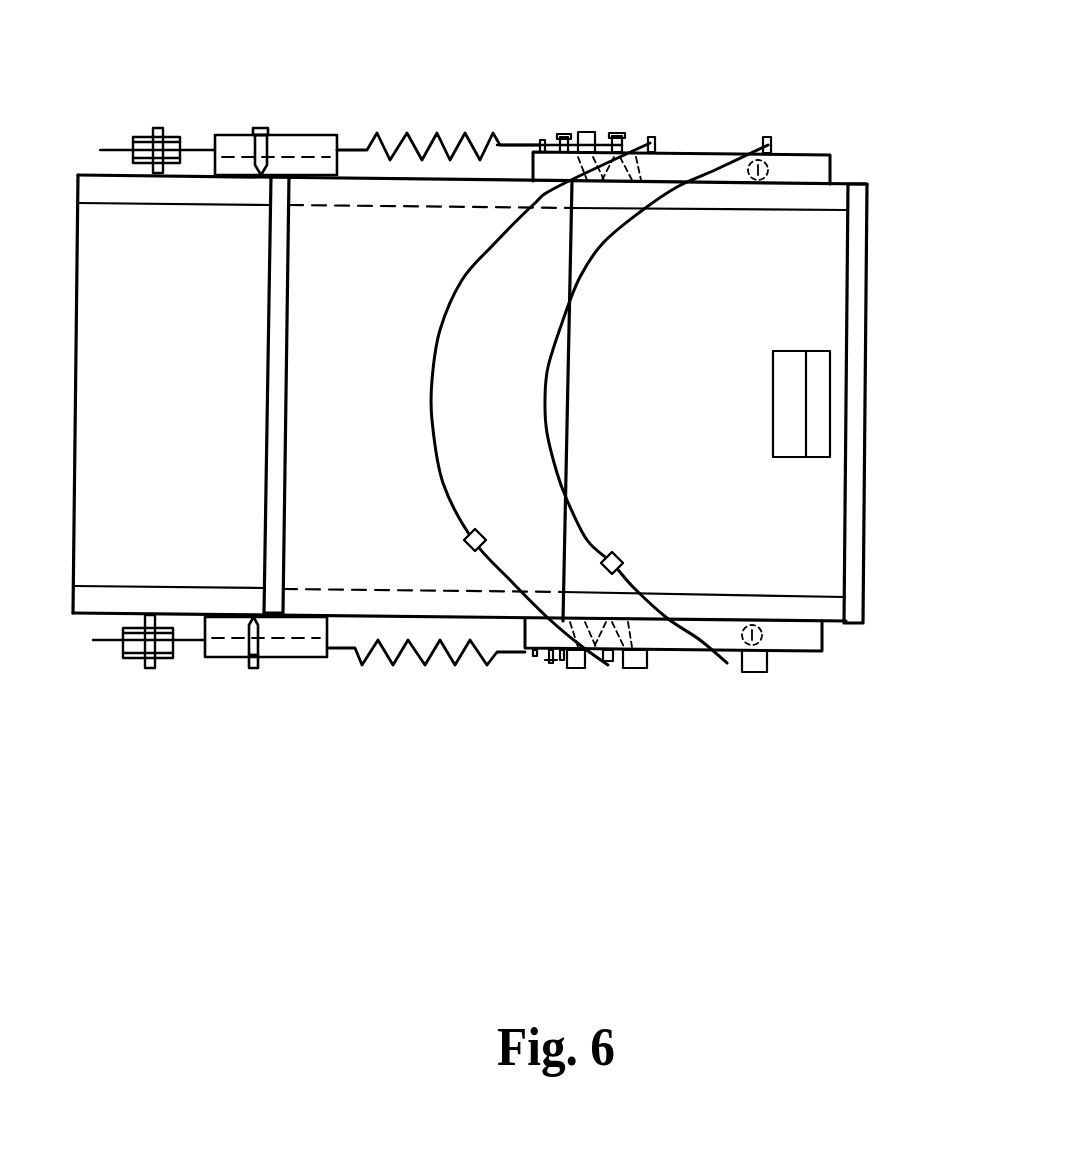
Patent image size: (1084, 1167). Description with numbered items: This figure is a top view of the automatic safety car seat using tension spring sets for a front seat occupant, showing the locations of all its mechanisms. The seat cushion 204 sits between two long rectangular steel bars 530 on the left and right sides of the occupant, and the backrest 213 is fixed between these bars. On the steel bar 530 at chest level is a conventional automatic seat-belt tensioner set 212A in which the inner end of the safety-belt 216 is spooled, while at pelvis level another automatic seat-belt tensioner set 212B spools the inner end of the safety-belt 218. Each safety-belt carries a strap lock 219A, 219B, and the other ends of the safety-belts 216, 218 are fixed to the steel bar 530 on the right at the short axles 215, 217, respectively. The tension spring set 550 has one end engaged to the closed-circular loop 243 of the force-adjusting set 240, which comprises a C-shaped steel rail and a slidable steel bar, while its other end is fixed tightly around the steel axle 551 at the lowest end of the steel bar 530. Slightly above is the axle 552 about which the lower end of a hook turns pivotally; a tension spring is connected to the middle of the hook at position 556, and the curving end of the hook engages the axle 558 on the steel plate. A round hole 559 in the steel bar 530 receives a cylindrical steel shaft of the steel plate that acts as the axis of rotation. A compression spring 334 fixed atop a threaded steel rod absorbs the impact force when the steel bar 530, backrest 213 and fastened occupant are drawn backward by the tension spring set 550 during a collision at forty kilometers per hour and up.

The seat cushion 204 is at (108, 530).
The automatic seat-belt tensioner set 212A is at (767, 667).
The automatic seat-belt tensioner set 212B is at (652, 662).
The backrest 213 is at (826, 271).
The short axle 215 is at (768, 136).
The safety-belt 216 is at (607, 240).
The short axle 217 is at (652, 136).
The safety-belt 218 is at (490, 244).
The strap lock 219A is at (622, 566).
The strap lock 219B is at (465, 539).
The force-adjusting set 240 is at (142, 126).
The closed-circular loop 243 is at (310, 658).
The compression spring 334 is at (770, 170).
The rectangular steel bar 530 is at (810, 632).
The tension spring set 550 is at (402, 132).
The steel axle 551 is at (535, 660).
The axle 552 is at (562, 134).
The position 556 is at (573, 134).
The axle 558 is at (610, 665).
The round hole 559 is at (590, 132).